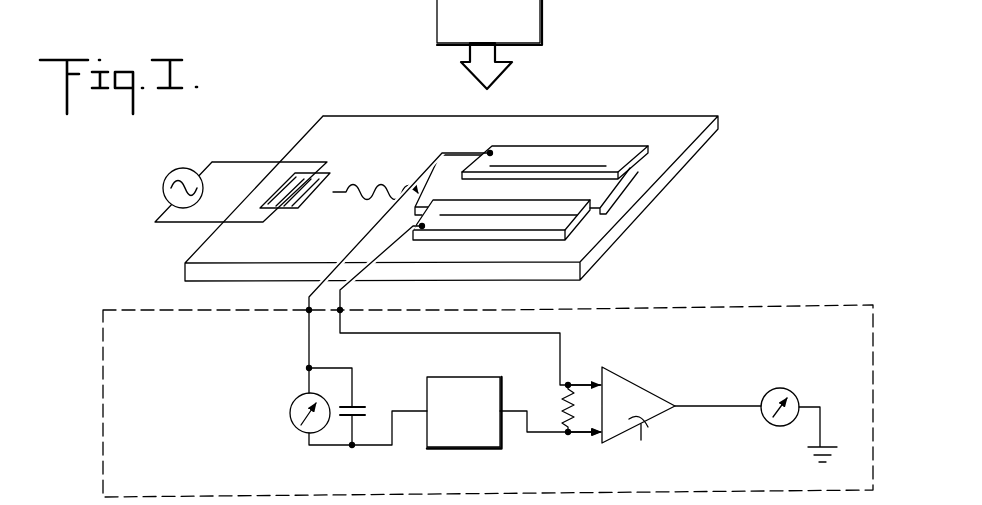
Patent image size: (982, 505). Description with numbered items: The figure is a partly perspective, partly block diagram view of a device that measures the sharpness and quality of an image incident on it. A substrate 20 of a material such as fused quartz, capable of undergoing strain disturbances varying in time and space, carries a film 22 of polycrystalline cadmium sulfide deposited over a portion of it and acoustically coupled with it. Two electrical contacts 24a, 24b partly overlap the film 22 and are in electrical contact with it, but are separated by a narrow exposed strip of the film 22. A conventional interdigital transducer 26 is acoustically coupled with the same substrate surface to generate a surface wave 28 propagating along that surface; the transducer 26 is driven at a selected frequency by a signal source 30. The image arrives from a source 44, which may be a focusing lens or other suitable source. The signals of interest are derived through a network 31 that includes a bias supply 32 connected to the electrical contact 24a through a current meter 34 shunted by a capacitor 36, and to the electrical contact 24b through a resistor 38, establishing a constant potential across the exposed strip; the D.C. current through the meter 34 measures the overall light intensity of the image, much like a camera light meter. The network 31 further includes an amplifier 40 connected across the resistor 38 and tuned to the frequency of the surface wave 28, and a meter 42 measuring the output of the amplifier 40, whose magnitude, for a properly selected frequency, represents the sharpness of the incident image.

The substrate 20 is at (664, 116).
The film 22 is at (614, 187).
The electrical contact 24a is at (592, 145).
The electrical contact 24b is at (541, 216).
The interdigital transducer 26 is at (338, 168).
The surface wave 28 is at (397, 181).
The signal source 30 is at (189, 166).
The network 31 is at (117, 310).
The bias supply 32 is at (455, 376).
The current meter 34 is at (290, 418).
The capacitor 36 is at (368, 407).
The resistor 38 is at (561, 414).
The amplifier 40 is at (659, 429).
The meter 42 is at (781, 427).
The source 44 is at (541, 6).